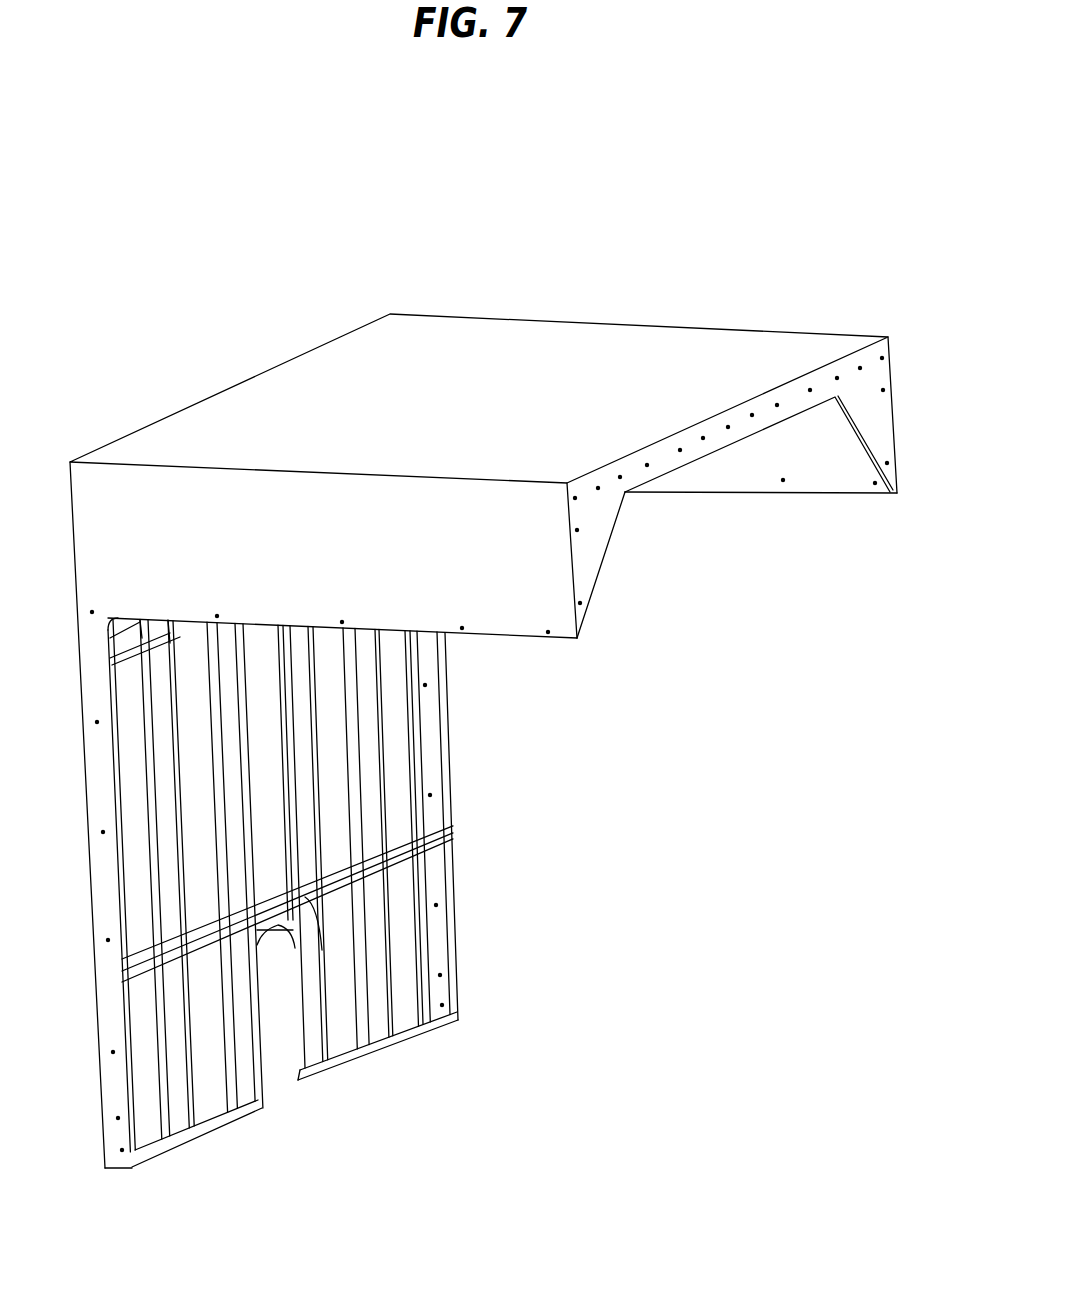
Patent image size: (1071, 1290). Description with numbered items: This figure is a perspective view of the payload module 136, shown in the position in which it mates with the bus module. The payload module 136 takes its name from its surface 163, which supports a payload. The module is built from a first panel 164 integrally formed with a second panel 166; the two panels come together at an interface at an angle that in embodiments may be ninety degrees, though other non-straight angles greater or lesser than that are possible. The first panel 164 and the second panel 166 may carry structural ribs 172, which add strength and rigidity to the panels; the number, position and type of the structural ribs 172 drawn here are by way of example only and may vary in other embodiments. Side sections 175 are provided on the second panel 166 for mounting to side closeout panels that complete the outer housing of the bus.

The payload module 136 is at (775, 217).
The surface 163 is at (479, 371).
The second panel 166 is at (746, 438).
The side sections 175 is at (386, 599).
The structural ribs 172 is at (480, 829).
The first panel 164 is at (353, 892).